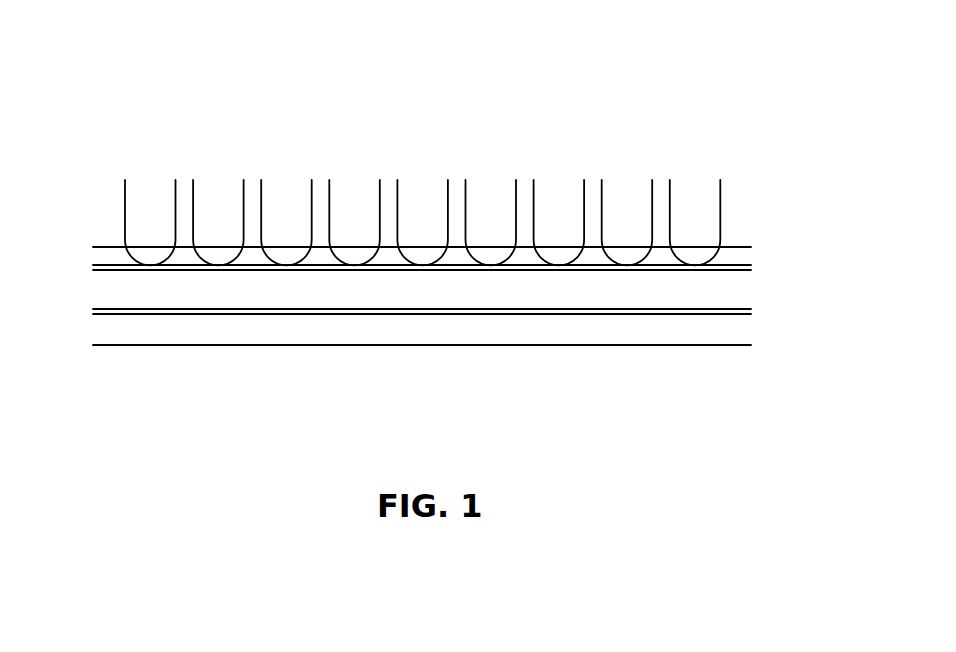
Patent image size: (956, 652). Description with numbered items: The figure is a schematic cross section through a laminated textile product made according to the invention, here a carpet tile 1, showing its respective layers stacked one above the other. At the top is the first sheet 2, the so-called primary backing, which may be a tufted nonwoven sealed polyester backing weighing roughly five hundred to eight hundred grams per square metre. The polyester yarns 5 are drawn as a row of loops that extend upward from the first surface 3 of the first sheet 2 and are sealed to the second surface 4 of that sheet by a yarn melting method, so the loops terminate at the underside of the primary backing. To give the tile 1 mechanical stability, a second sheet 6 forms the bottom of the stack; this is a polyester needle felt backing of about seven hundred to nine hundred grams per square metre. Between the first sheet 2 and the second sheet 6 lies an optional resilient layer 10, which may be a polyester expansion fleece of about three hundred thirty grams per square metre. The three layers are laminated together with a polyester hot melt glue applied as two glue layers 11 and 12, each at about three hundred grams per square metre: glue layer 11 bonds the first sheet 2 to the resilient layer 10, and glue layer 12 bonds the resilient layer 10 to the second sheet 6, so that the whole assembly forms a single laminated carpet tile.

The tile 1 is at (122, 136).
The first sheet 2 is at (92, 253).
The first surface 3 is at (740, 244).
The second surface 4 is at (735, 271).
The polyester yarns 5 is at (331, 183).
The second sheet 6 is at (437, 333).
The resilient layer 10 is at (100, 288).
The glue layer 11 is at (750, 266).
The glue layer 12 is at (752, 313).